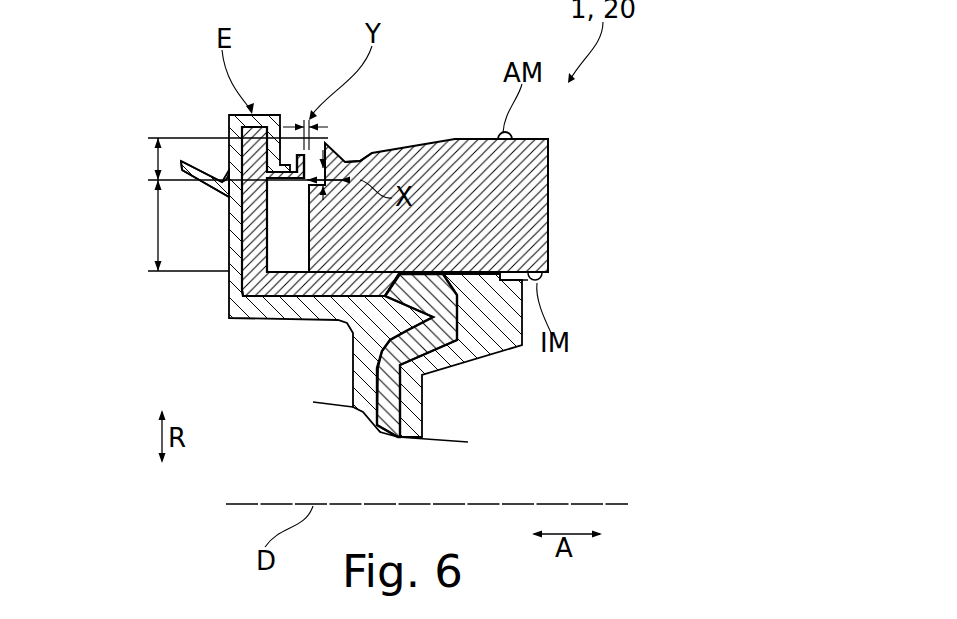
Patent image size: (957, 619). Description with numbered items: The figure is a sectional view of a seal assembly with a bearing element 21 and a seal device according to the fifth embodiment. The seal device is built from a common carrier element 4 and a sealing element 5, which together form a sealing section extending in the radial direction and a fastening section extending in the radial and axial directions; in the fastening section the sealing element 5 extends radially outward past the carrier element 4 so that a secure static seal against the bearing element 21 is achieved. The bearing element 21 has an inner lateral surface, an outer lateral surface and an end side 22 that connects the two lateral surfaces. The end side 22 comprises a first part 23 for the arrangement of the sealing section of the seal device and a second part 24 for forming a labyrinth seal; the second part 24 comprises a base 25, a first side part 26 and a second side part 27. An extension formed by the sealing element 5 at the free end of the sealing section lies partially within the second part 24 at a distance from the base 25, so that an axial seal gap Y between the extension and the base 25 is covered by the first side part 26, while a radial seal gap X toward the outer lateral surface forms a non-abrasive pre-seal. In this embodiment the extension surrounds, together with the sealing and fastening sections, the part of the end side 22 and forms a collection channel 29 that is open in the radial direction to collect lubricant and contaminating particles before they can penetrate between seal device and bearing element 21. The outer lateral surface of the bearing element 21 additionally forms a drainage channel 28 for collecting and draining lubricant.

The bearing element 21 is at (524, 231).
The end side 22 is at (228, 252).
The first part 23 is at (158, 235).
The second part 24 is at (158, 158).
The base 25 is at (300, 186).
The first side part 26 is at (224, 198).
The second side part 27 is at (302, 187).
The drainage channel 28 is at (346, 155).
The collection channel 29 is at (286, 149).
The carrier element 4 is at (418, 348).
The sealing element 5 is at (408, 383).